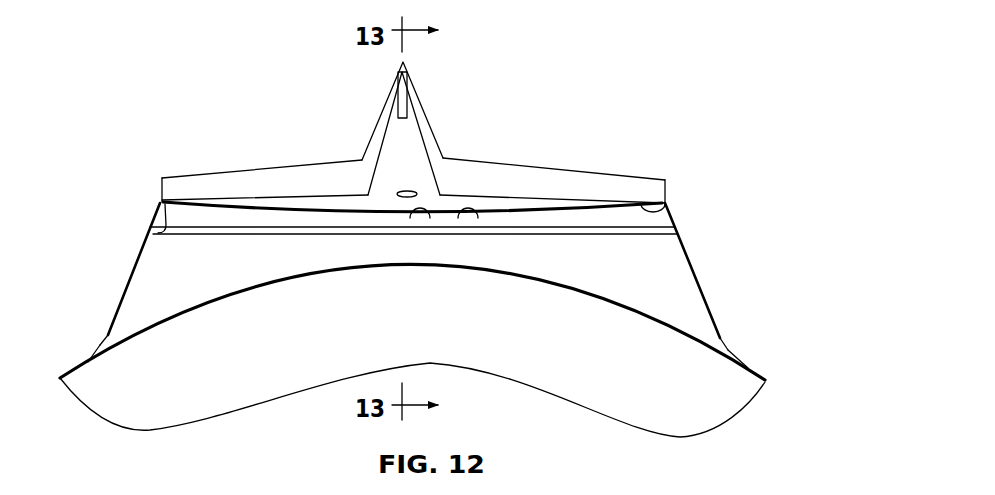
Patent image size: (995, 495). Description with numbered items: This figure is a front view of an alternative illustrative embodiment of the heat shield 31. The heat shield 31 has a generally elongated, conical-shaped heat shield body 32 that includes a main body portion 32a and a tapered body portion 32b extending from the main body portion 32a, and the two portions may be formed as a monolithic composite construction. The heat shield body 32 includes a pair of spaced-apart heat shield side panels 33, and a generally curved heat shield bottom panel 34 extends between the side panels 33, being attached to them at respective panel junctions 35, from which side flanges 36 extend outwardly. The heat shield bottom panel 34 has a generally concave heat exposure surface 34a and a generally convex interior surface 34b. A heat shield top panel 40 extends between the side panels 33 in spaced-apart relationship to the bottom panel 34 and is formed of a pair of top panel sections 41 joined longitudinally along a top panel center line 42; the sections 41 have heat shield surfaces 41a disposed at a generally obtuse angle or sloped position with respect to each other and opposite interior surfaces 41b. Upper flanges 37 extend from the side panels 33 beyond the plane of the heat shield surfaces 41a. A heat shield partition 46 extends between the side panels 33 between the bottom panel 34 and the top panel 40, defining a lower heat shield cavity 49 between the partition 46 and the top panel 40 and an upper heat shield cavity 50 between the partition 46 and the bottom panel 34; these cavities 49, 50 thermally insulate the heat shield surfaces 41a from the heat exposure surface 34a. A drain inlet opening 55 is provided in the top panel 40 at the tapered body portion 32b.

The heat shield 31 is at (603, 116).
The heat shield body 32 is at (658, 167).
The main body portion 32a is at (708, 283).
The tapered body portion 32b is at (442, 134).
The heat shield side panels 33 is at (110, 325).
The heat shield bottom panel 34 is at (578, 284).
The heat exposure surface 34a is at (607, 300).
The interior surface 34b is at (640, 318).
The panel junctions 35 is at (88, 362).
The side flanges 36 is at (97, 402).
The upper flanges 37 is at (160, 185).
The heat shield top panel 40 is at (283, 199).
The top panel sections 41 is at (373, 207).
The heat shield surfaces 41a is at (217, 200).
The interior surfaces 41b is at (150, 233).
The top panel center line 42 is at (433, 218).
The heat shield partition 46 is at (558, 232).
The lower heat shield cavity 49 is at (674, 308).
The upper heat shield cavity 50 is at (567, 218).
The drain inlet opening 55 is at (410, 188).